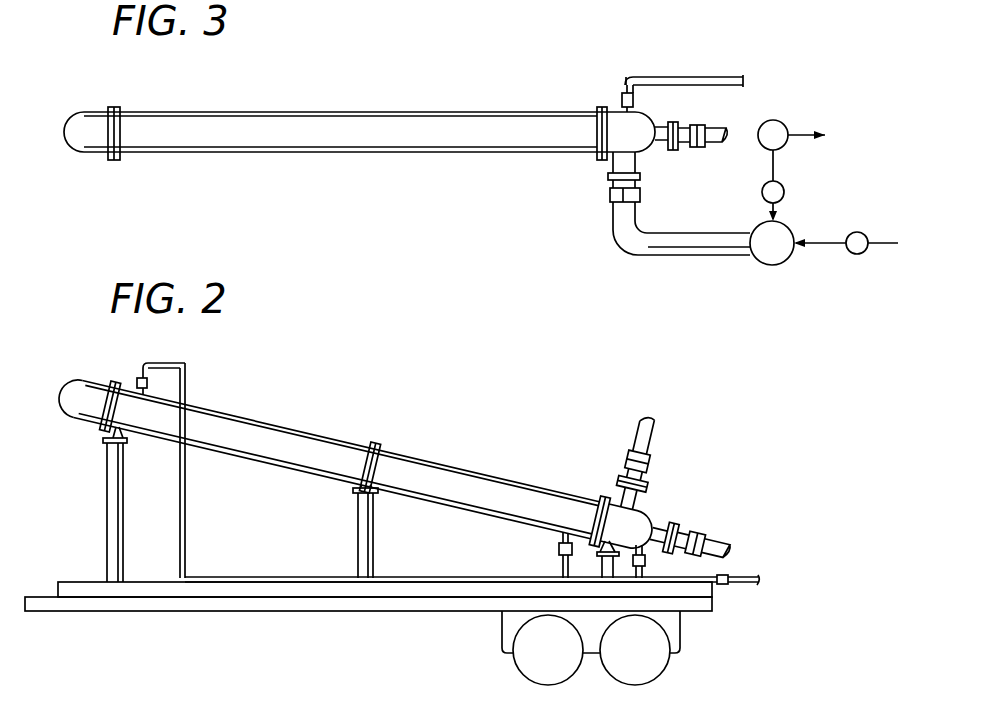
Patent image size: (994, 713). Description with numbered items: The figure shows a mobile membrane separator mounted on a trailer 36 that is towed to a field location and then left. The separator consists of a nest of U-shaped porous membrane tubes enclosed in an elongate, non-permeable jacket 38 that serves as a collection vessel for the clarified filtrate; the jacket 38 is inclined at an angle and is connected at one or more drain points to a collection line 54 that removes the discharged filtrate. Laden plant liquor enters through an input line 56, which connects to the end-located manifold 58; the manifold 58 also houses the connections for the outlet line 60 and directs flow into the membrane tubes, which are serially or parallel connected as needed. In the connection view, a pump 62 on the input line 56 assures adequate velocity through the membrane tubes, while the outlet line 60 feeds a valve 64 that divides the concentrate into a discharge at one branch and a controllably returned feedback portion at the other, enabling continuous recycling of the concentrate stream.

In FIG. 2, the trailer 36 is at (713, 600).
In FIG. 3, the jacket 38 is at (398, 155).
In FIG. 2, the jacket 38 is at (324, 436).
In FIG. 3, the collection line 54 is at (681, 77).
In FIG. 2, the collection line 54 is at (412, 577).
In FIG. 3, the input line 56 is at (671, 257).
In FIG. 2, the input line 56 is at (656, 437).
In FIG. 2, the manifold 58 is at (646, 518).
In FIG. 3, the outlet line 60 is at (718, 122).
In FIG. 2, the outlet line 60 is at (713, 545).
In FIG. 3, the pump 62 is at (773, 266).
In FIG. 3, the valve 64 is at (790, 146).